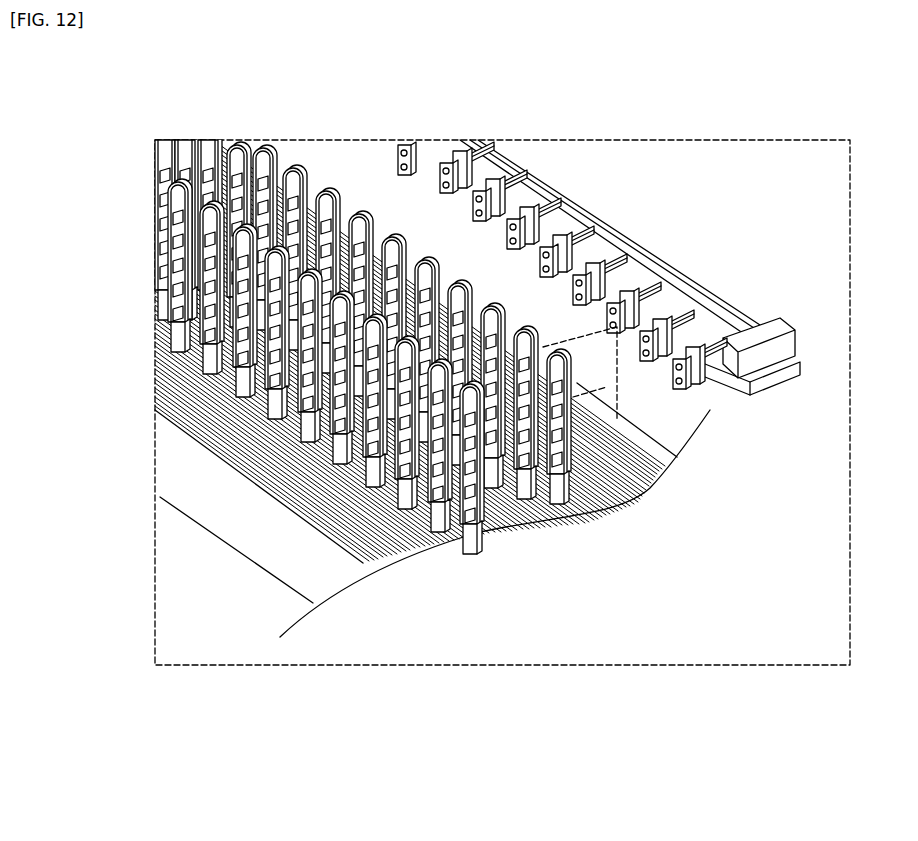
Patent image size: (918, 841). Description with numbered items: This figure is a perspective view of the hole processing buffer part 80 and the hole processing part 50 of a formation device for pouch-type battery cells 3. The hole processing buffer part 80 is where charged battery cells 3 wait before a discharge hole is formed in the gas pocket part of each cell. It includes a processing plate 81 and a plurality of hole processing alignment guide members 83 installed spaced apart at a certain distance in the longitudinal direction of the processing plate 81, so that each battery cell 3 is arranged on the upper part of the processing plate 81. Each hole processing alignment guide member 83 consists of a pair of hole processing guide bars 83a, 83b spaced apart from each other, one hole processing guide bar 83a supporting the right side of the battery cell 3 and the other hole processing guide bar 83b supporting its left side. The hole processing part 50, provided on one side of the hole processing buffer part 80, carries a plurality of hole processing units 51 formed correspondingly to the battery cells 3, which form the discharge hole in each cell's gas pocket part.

The battery cell 3 is at (571, 333).
The hole processing part 50 is at (585, 249).
The hole processing unit 51 is at (398, 190).
The hole processing buffer part 80 is at (401, 388).
The processing plate 81 is at (222, 508).
The hole processing alignment guide member 83 is at (390, 461).
The hole processing guide bar 83a is at (582, 478).
The hole processing guide bar 83b is at (492, 502).